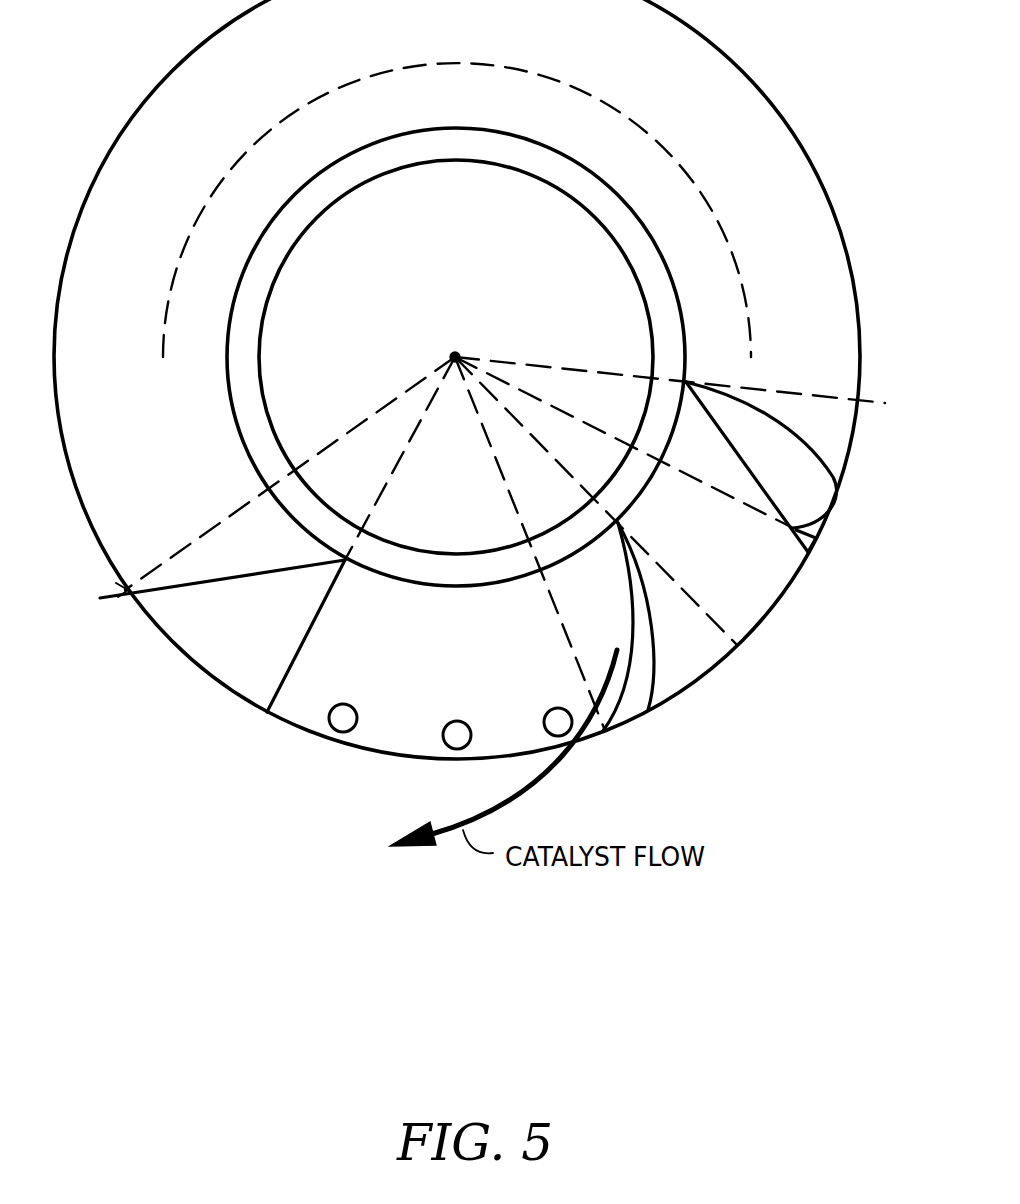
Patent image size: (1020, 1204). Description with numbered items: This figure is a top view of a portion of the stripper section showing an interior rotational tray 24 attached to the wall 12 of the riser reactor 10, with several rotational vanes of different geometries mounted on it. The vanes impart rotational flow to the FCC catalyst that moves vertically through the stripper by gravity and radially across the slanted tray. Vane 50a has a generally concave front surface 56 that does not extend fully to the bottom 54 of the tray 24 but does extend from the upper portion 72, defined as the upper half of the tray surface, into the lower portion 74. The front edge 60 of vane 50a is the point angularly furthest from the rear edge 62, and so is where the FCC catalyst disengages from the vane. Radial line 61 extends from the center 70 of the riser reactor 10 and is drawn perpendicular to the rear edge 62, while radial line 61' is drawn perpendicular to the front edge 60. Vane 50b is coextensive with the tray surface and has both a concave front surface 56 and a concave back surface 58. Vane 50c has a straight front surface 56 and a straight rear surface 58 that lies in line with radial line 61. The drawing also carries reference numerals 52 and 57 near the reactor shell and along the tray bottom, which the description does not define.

The riser reactor 10 is at (466, 230).
The wall 12 is at (306, 237).
The tray 24 is at (144, 423).
The outer wall of reactor 52 is at (473, 587).
The bottom 54 is at (428, 759).
The front surface 56 is at (760, 480).
The catalyst outlet nozzles 57 is at (462, 722).
The back surface 58 is at (787, 427).
The front edge 60 is at (813, 547).
The radial line 61 is at (604, 494).
The radial line 61' is at (459, 542).
The rear edge 62 is at (687, 390).
The center 70 is at (460, 354).
The upper portion 72 is at (726, 328).
The lower portion 74 is at (827, 328).
The vane 50a is at (778, 490).
The vane 50b is at (633, 707).
The vane 50c is at (235, 642).